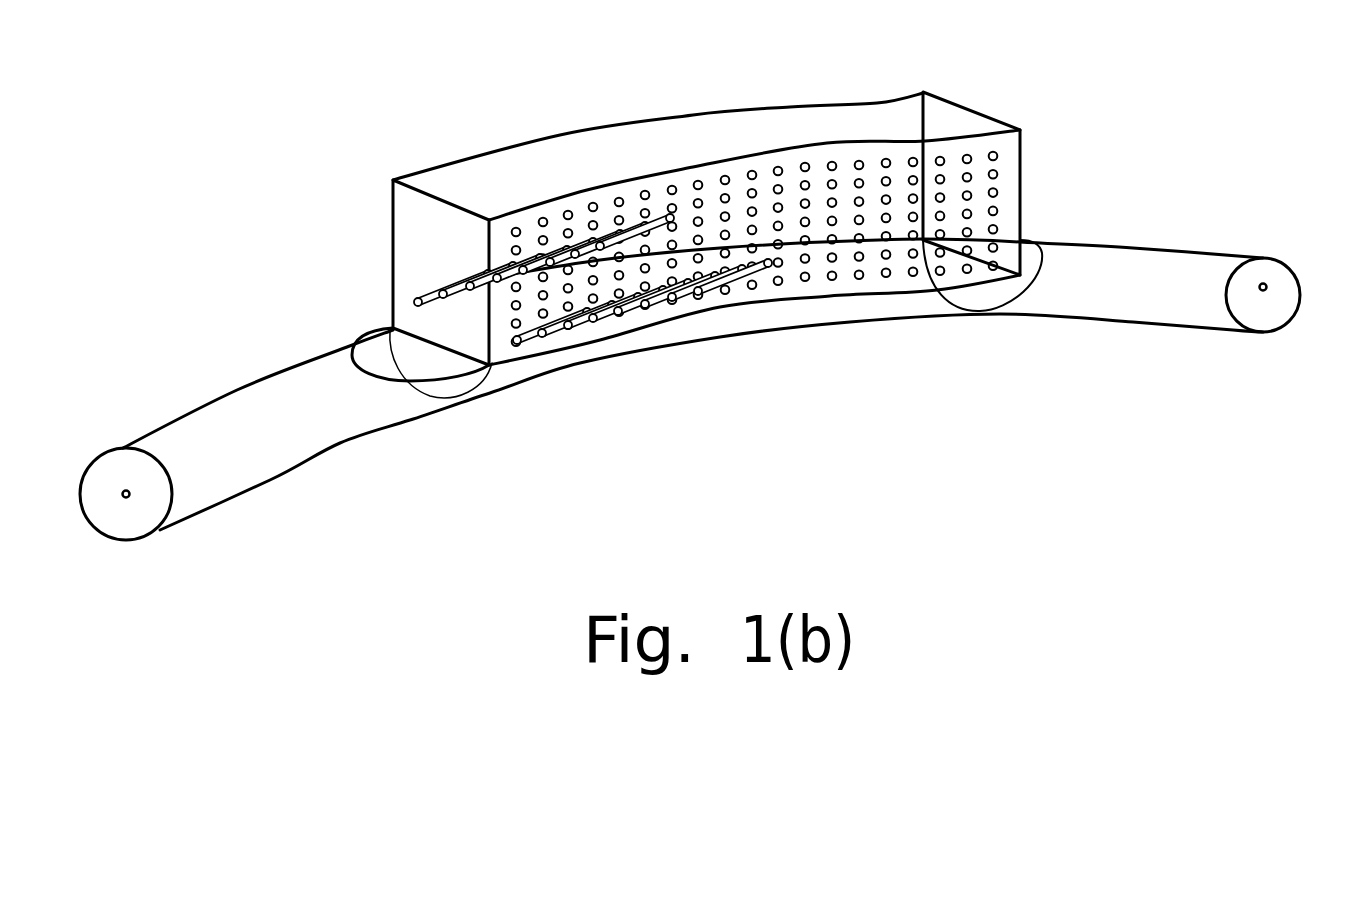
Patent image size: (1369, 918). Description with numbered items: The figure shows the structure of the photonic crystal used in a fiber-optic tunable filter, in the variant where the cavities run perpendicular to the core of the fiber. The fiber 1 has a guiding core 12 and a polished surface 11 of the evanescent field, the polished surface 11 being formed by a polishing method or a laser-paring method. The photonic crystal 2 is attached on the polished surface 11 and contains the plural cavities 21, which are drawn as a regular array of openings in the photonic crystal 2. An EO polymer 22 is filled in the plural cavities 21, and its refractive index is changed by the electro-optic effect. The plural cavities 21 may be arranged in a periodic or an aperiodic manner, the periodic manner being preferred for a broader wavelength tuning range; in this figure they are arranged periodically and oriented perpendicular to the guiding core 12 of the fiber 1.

The fiber 1 is at (1058, 318).
The polished surface 11 is at (497, 390).
The guiding core 12 is at (1263, 287).
The photonic crystal 2 is at (792, 107).
The plural cavities 21 is at (995, 157).
The EO polymer 22 is at (724, 177).